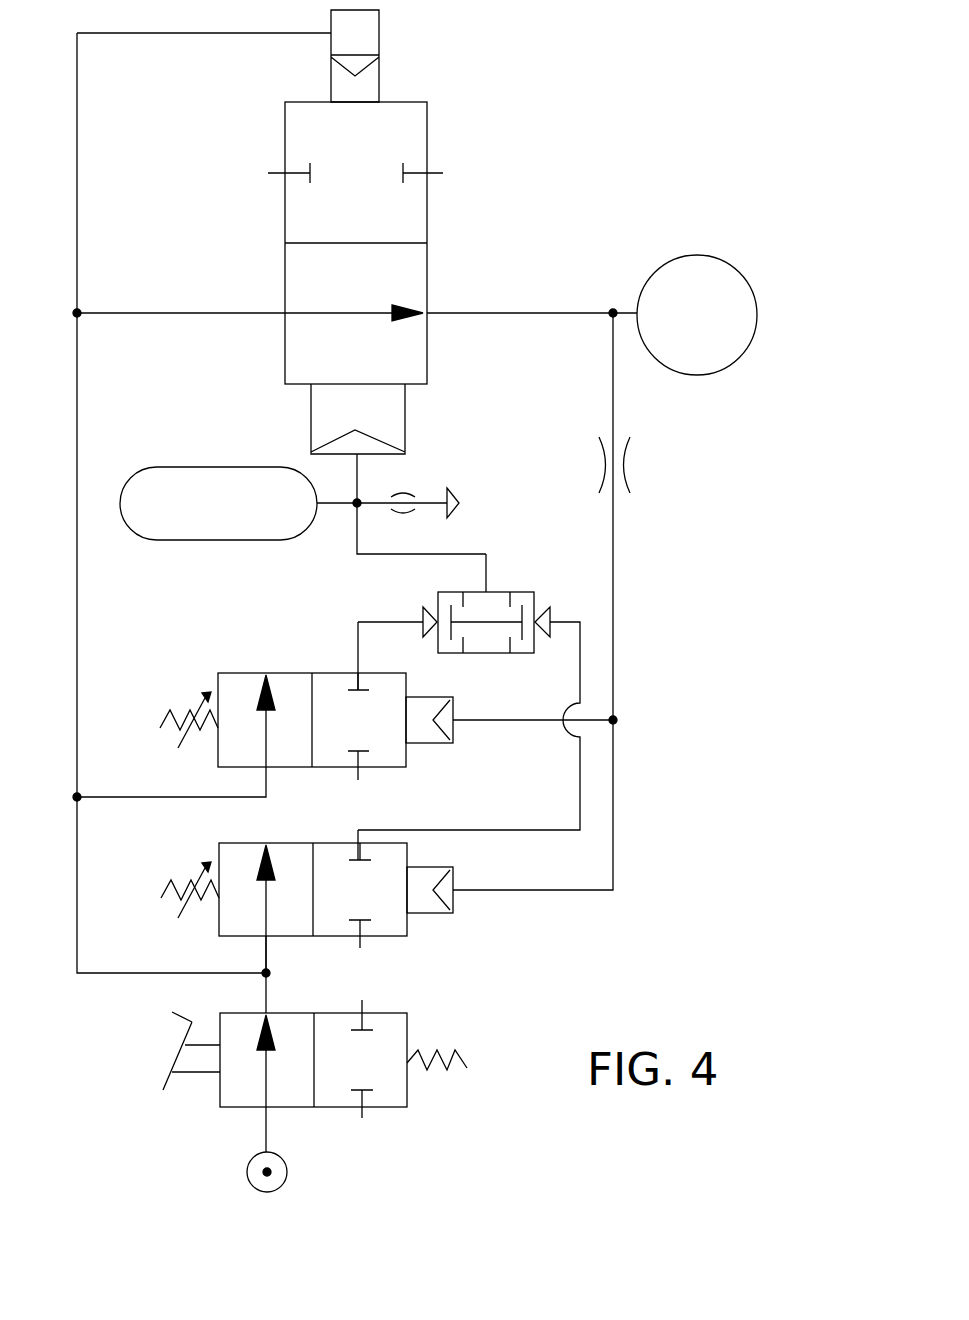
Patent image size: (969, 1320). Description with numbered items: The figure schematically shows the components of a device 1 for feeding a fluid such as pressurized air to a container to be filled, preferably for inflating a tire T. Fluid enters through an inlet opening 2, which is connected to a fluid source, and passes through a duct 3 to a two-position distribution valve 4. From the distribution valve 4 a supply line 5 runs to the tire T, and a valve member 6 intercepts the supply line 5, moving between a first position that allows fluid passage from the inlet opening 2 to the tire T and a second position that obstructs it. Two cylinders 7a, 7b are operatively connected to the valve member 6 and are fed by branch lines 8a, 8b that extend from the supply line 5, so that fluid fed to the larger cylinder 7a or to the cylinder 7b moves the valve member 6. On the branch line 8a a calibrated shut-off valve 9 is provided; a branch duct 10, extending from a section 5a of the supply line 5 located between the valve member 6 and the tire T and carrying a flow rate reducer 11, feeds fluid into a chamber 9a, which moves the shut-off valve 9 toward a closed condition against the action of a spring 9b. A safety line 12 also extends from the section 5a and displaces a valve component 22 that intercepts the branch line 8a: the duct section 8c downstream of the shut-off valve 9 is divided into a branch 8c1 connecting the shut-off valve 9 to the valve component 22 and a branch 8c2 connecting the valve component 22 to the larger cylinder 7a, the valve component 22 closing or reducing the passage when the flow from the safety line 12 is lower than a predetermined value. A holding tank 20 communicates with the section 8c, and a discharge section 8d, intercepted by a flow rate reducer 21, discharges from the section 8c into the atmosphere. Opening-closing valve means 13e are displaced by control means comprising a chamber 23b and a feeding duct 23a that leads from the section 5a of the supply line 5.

The device 1 is at (505, 933).
The inlet opening 2 is at (288, 1172).
The duct 3 is at (266, 1137).
The distribution valve 4 is at (408, 1003).
The supply line 5 is at (77, 870).
The section of the supply line 5a is at (528, 310).
The valve member 6 is at (285, 130).
The larger cylinder 7a is at (311, 420).
The cylinder 7b is at (379, 75).
The branch line 8a is at (267, 950).
The branch line 8b is at (77, 188).
The section of the branch line 8c is at (360, 573).
The branch 8c1 is at (581, 673).
The branch 8c2 is at (447, 552).
The discharge section 8d is at (368, 500).
The shut-off valve 9 is at (410, 928).
The chamber 9a is at (430, 867).
The spring 9b is at (170, 880).
The branch duct 10 is at (617, 870).
The flow rate reducer 11 is at (623, 450).
The safety line 12 is at (357, 628).
The opening-closing valve means 13e is at (293, 673).
The holding tank 20 is at (185, 467).
The flow rate reducer 21 is at (403, 496).
The valve component 22 is at (496, 592).
The feeding duct 23a is at (490, 722).
The chamber 23b is at (425, 745).
The tire T is at (702, 255).